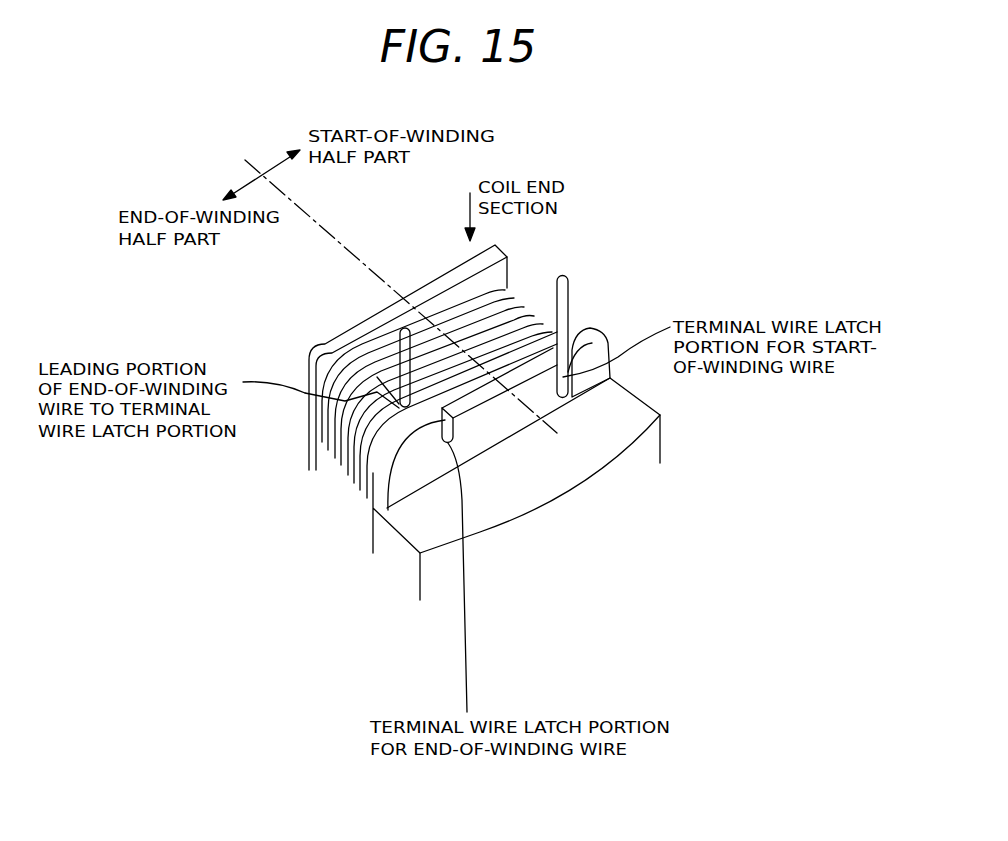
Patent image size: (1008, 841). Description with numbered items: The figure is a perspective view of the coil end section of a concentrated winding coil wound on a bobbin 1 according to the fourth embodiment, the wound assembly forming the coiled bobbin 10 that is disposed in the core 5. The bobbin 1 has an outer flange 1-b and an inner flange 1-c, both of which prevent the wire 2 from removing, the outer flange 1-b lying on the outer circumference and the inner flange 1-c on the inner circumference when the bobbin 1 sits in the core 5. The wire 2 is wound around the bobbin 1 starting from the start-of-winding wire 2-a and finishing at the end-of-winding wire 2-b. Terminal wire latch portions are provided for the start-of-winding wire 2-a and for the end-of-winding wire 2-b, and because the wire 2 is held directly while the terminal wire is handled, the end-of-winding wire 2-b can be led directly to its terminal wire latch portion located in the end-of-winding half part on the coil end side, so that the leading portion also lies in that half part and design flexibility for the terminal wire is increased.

The bobbin 1 is at (355, 422).
The outer flange 1-b is at (371, 510).
The inner flange 1-c is at (307, 450).
The wire 2 is at (437, 319).
The start-of-winding wire 2-a is at (565, 305).
The end-of-winding wire 2-b is at (400, 345).
The core 5 is at (523, 440).
The coiled bobbin 10 is at (573, 498).